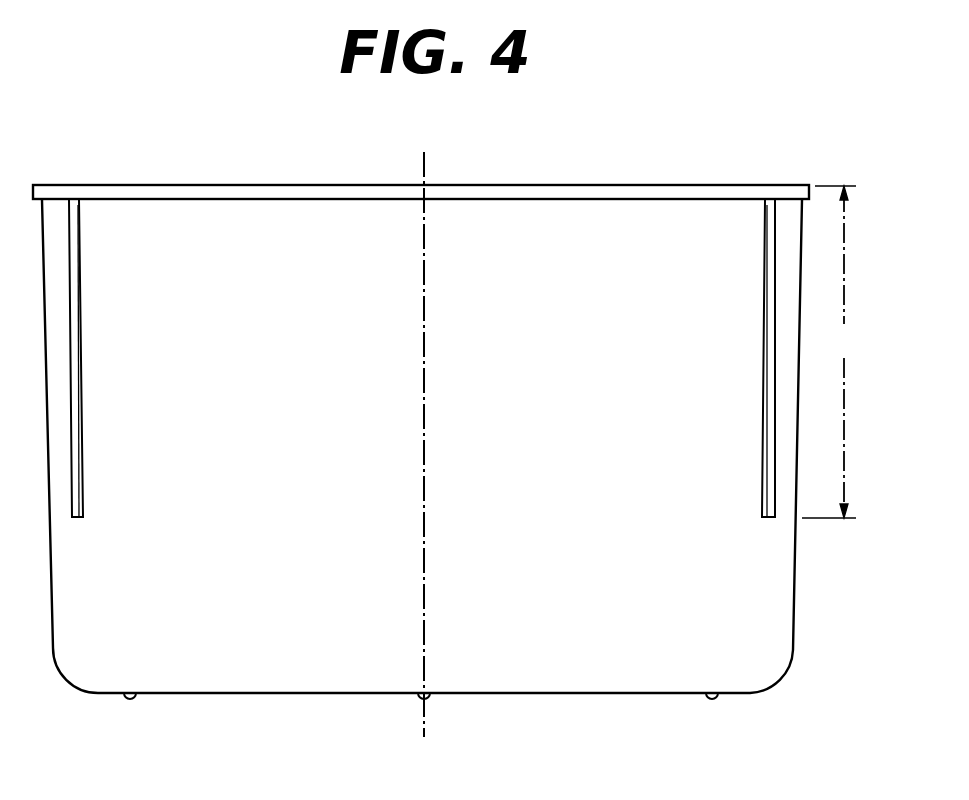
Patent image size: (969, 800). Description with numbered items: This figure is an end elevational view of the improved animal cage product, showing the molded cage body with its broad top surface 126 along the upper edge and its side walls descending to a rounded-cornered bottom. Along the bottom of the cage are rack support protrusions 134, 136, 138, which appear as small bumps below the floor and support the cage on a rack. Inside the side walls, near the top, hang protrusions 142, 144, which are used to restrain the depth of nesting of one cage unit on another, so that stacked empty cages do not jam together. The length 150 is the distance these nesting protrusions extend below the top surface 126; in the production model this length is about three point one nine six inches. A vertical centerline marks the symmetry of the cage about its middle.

The top surface 126 is at (793, 186).
The length 150 is at (840, 352).
The protrusion 142 is at (760, 477).
The protrusion 144 is at (83, 497).
The rack support protrusion 134 is at (719, 698).
The rack support protrusion 136 is at (430, 701).
The rack support protrusion 138 is at (136, 699).